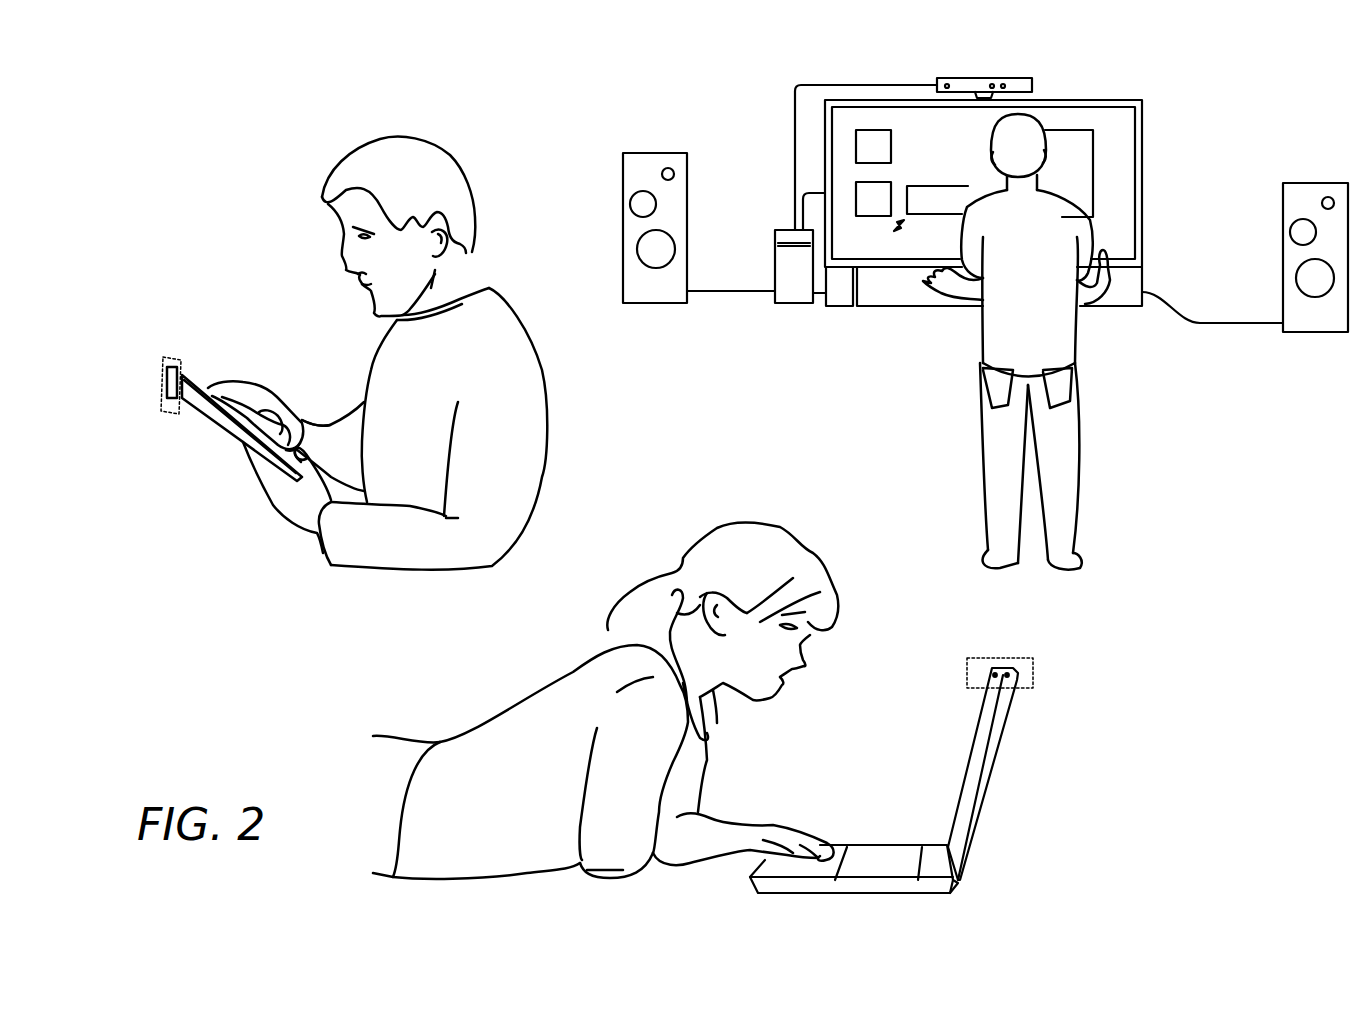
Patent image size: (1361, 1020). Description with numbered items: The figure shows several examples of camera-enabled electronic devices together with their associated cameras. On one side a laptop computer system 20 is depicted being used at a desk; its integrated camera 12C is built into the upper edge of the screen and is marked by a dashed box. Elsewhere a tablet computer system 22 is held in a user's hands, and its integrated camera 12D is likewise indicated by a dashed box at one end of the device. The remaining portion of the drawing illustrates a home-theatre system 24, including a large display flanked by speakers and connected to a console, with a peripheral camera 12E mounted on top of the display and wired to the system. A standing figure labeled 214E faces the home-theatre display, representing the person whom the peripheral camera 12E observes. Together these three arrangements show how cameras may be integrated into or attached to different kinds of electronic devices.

The integrated camera 12C is at (1005, 657).
The integrated camera 12D is at (175, 357).
The peripheral camera 12E is at (978, 78).
The laptop computer system 20 is at (1060, 753).
The tablet computer system 22 is at (222, 362).
The home-theatre system 24 is at (1210, 133).
The user 214E is at (1053, 357).